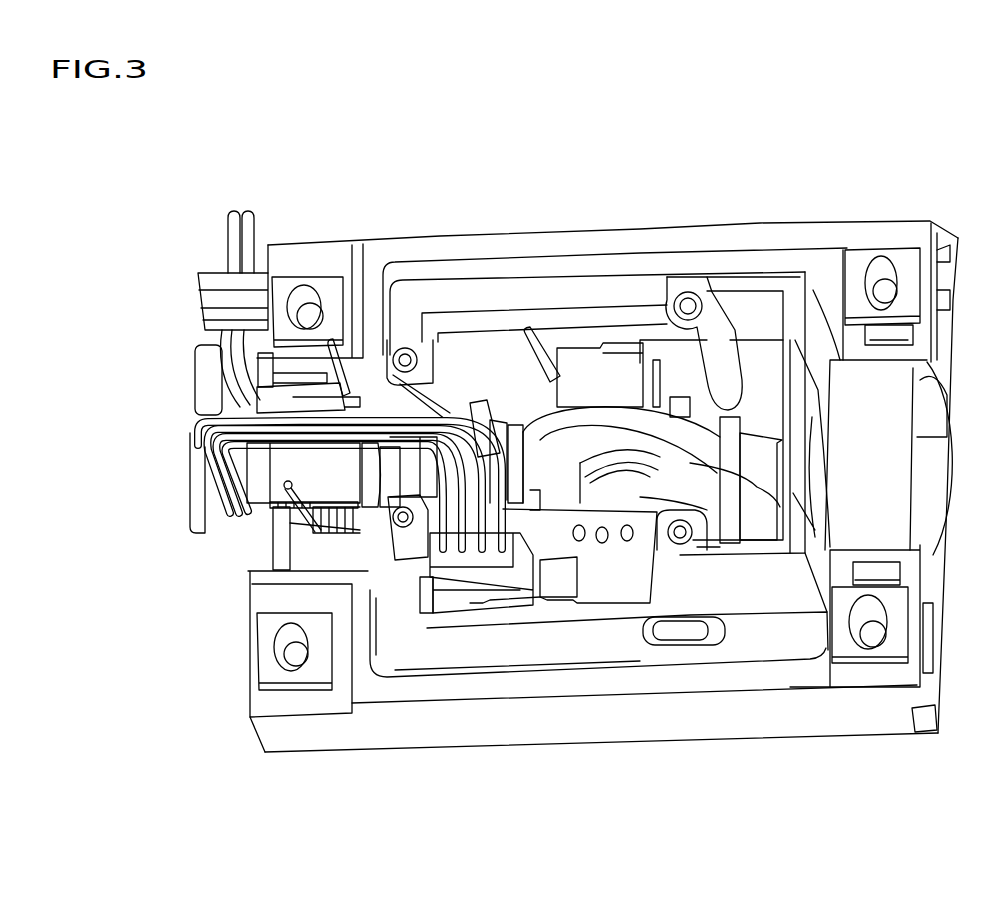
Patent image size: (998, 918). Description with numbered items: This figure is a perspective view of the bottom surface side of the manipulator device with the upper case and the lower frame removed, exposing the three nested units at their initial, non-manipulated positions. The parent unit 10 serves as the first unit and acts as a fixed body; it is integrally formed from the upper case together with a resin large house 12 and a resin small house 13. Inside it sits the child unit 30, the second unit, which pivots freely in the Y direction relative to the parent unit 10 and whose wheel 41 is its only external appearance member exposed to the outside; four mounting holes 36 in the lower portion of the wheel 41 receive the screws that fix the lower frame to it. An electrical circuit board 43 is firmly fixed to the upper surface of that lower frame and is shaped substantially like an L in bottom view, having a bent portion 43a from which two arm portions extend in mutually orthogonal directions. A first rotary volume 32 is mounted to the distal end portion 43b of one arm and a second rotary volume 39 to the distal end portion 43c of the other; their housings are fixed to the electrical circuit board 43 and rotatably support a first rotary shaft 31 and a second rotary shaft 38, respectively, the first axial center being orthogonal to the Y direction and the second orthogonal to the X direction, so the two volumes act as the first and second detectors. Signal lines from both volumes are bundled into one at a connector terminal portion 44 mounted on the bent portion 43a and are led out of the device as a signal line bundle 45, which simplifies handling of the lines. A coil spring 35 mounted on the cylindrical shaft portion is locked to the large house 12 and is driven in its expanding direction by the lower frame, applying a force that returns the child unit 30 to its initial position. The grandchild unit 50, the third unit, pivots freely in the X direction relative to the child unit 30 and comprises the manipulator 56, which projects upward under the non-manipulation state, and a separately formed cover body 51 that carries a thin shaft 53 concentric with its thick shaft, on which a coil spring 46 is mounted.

The parent unit 10 is at (995, 118).
The large house 12 is at (870, 230).
The small house 13 is at (897, 407).
The child unit 30 is at (813, 287).
The first rotary shaft 31 is at (370, 473).
The first rotary volume 32 is at (372, 470).
The coil spring 35 is at (277, 487).
The mounting holes 36 is at (688, 292).
The second rotary shaft 38 is at (627, 483).
The second rotary volume 39 is at (640, 507).
The wheel 41 is at (785, 277).
The electrical circuit board 43 is at (598, 590).
The bent portion 43a is at (430, 585).
The distal end portion 43b is at (478, 427).
The distal end portion 43c is at (590, 557).
The connector terminal portion 44 is at (462, 592).
The signal line bundle 45 is at (240, 212).
The coil spring 46 is at (525, 330).
The grandchild unit 50 is at (645, 100).
The cover body 51 is at (543, 433).
The thin shaft 53 is at (628, 343).
The manipulator 56 is at (633, 460).